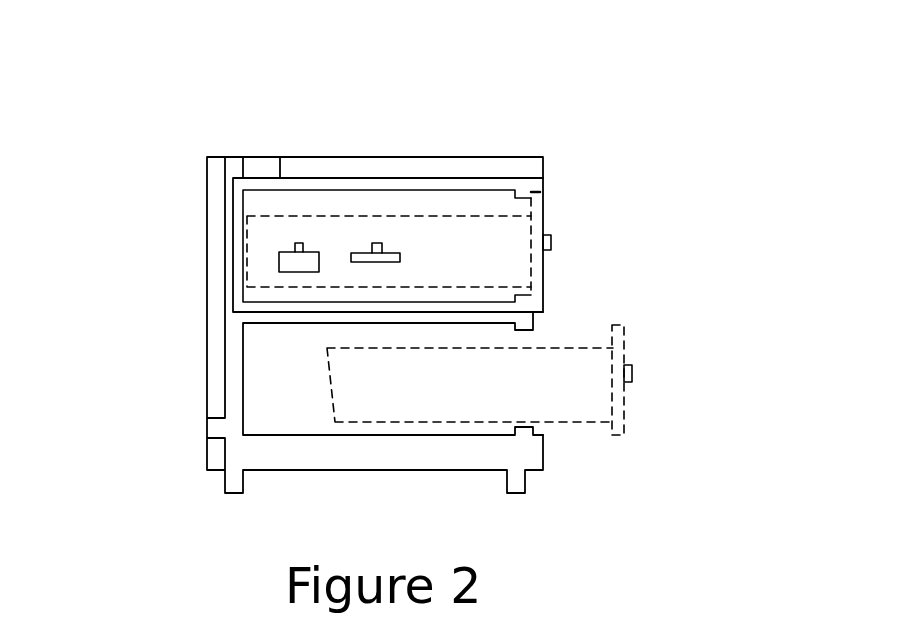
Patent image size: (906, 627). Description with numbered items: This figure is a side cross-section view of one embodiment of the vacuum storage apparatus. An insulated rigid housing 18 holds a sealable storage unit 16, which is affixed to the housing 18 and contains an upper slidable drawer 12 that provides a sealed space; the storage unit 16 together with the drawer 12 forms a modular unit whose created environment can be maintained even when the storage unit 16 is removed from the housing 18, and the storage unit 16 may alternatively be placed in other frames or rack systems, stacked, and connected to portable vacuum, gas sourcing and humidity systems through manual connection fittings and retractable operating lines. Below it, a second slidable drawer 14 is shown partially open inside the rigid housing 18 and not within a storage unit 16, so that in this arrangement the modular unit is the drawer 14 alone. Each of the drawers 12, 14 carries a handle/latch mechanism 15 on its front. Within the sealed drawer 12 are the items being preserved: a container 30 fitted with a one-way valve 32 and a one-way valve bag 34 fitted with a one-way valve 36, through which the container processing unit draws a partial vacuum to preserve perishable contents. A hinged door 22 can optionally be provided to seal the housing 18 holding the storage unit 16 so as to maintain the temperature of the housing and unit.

The drawer 12 is at (543, 218).
The drawer 14 is at (616, 350).
The handle/latch mechanism 15 is at (551, 243).
The storage unit 16 is at (523, 188).
The rigid housing 18 is at (515, 157).
The hinged door 22 is at (543, 290).
The container 30 is at (279, 262).
The one-way valve 32 is at (293, 247).
The one-way valve bag 34 is at (351, 253).
The one-way valve 36 is at (375, 243).